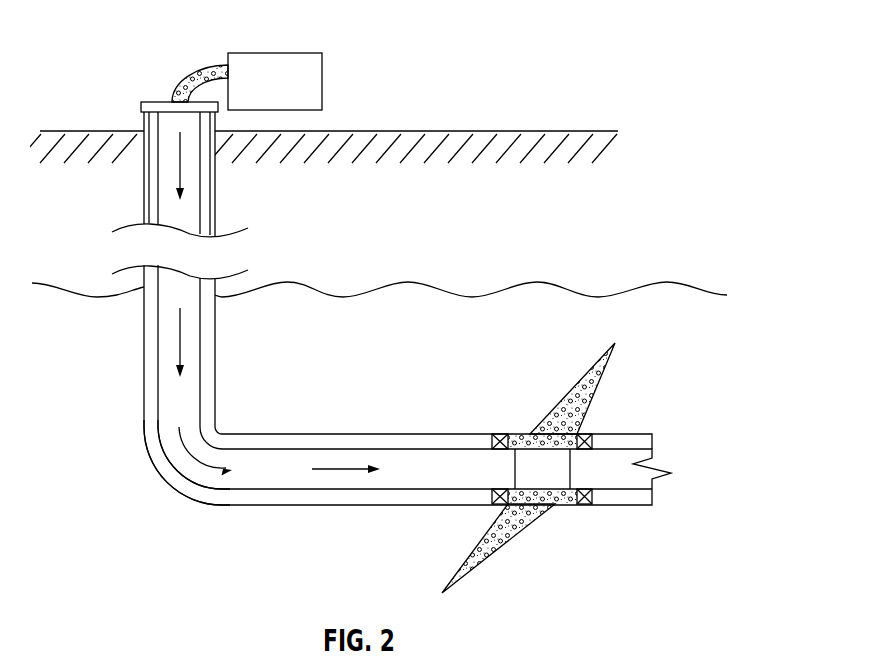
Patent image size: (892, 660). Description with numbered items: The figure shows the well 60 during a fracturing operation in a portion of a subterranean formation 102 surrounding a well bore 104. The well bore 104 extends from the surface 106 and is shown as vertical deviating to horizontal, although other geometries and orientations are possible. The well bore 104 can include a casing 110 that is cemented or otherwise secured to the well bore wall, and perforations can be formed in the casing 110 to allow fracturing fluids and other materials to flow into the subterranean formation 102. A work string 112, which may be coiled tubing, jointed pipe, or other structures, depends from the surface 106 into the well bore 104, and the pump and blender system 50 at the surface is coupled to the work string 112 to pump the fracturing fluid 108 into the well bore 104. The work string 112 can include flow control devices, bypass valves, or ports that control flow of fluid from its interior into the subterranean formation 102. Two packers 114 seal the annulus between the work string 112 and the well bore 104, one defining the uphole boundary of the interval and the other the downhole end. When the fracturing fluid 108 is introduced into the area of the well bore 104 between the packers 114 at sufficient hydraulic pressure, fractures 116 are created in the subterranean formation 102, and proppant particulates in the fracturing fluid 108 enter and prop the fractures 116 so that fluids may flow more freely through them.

The pump and blender system 50 is at (297, 92).
The well 60 is at (162, 494).
The subterranean formation 102 is at (408, 325).
The well bore 104 is at (155, 197).
The surface 106 is at (478, 131).
The fracturing fluid 108 is at (193, 75).
The casing 110 is at (213, 205).
The work string 112 is at (158, 375).
The packers 114 is at (500, 432).
The fractures 116 is at (526, 386).